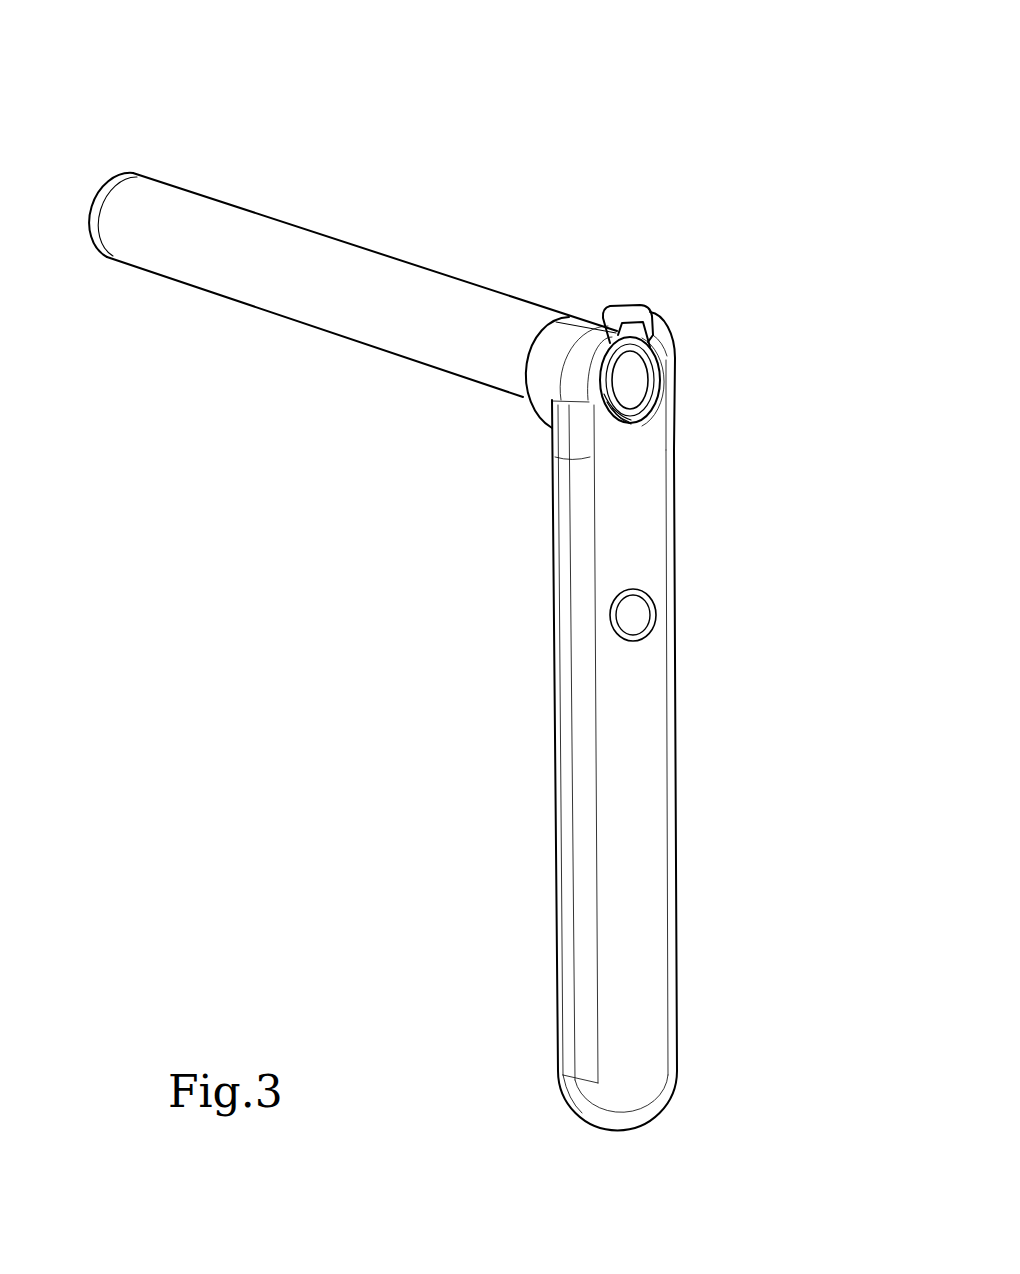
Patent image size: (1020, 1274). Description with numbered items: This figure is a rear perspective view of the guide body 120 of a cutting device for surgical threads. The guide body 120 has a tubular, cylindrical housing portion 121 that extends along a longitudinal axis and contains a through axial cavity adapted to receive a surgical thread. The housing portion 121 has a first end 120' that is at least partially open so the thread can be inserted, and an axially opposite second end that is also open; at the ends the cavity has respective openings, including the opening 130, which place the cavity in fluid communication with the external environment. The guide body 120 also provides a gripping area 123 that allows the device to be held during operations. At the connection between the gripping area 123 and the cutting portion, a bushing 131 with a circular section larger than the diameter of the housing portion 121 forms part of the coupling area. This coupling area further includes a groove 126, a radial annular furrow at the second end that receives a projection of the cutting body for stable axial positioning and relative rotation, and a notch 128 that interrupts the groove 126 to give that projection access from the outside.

The guide body 120 is at (422, 567).
The first end 120' is at (90, 163).
The housing portion 121 is at (239, 238).
The gripping area 123 is at (635, 933).
The groove 126 is at (636, 381).
The notch 128 is at (592, 303).
The opening 130 is at (608, 382).
The bushing 131 is at (545, 370).